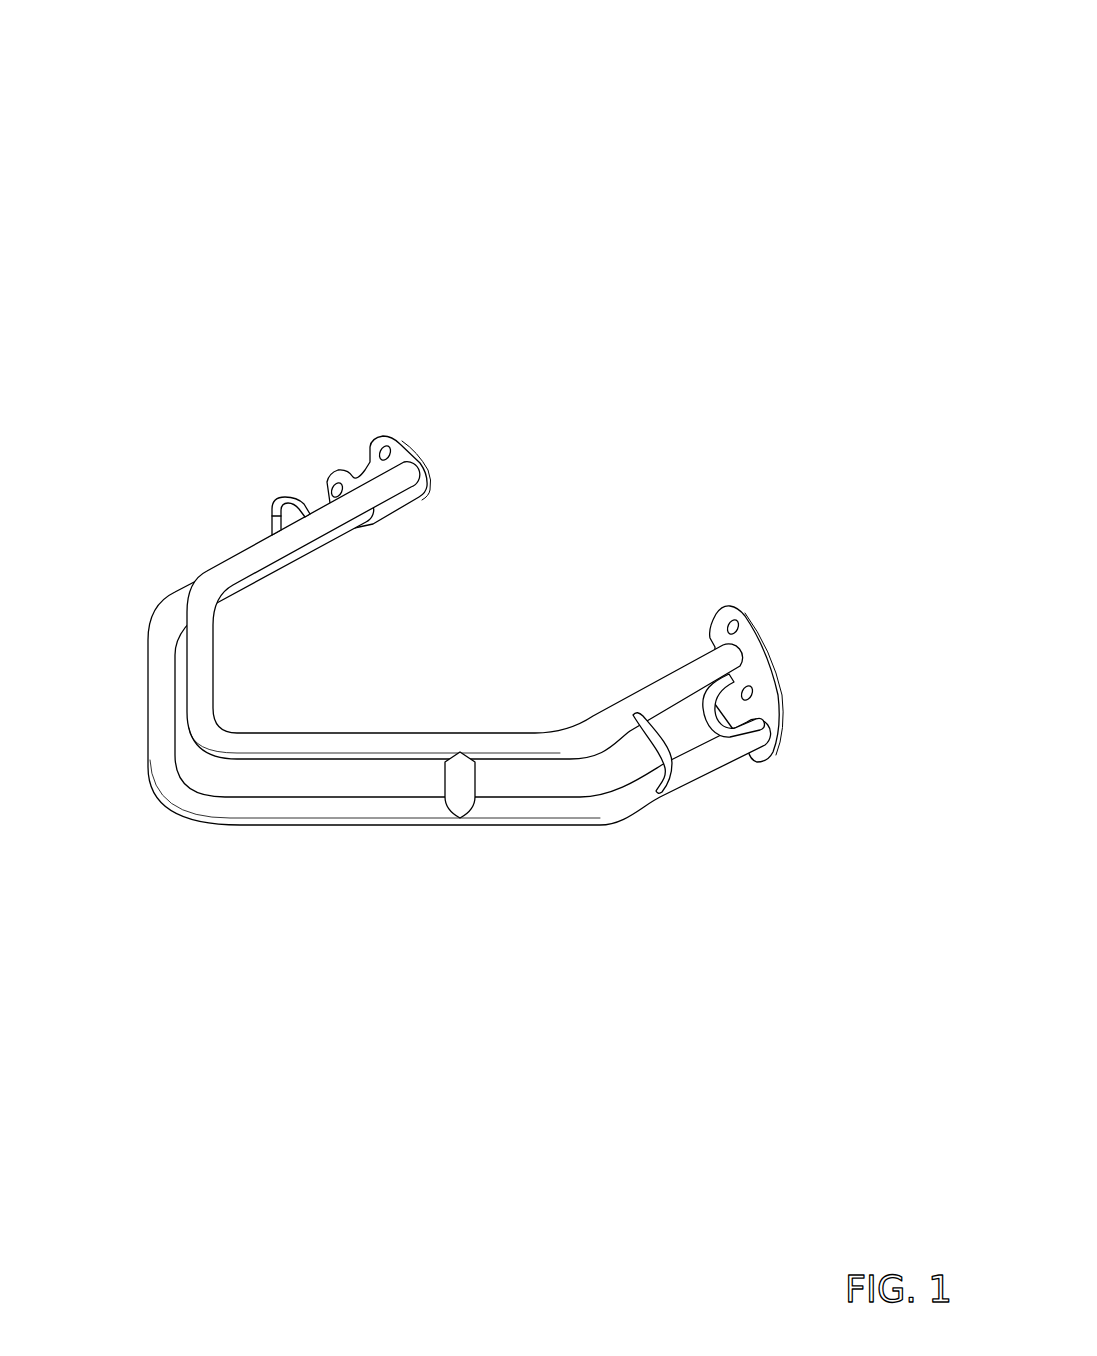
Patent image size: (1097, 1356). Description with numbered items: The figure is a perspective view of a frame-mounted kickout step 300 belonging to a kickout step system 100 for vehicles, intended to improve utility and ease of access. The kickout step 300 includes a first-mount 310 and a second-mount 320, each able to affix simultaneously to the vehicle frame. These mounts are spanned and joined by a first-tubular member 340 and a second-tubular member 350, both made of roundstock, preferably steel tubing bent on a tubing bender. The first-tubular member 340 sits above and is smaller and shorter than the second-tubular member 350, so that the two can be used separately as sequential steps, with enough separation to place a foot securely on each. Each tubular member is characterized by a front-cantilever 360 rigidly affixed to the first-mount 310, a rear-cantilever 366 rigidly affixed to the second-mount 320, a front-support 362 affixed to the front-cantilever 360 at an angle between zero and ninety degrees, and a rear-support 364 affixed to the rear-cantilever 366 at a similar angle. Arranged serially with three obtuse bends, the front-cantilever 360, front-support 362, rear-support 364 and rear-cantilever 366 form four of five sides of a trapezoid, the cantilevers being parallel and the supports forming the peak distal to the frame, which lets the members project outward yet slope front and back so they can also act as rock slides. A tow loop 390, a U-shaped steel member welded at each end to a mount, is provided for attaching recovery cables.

The kickout step system 100 is at (782, 72).
The frame-mounted kickout step 300 is at (852, 238).
The first-mount 310 is at (380, 437).
The second-mount 320 is at (725, 606).
The first-tubular member 340 is at (284, 732).
The second-tubular member 350 is at (272, 824).
The front-cantilever 360 is at (318, 472).
The front-support 362 is at (123, 615).
The rear-support 364 is at (612, 856).
The rear-cantilever 366 is at (785, 785).
The tow loop 390 is at (768, 749).